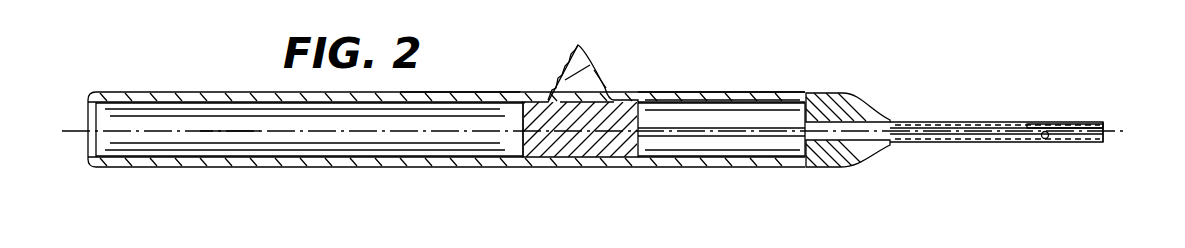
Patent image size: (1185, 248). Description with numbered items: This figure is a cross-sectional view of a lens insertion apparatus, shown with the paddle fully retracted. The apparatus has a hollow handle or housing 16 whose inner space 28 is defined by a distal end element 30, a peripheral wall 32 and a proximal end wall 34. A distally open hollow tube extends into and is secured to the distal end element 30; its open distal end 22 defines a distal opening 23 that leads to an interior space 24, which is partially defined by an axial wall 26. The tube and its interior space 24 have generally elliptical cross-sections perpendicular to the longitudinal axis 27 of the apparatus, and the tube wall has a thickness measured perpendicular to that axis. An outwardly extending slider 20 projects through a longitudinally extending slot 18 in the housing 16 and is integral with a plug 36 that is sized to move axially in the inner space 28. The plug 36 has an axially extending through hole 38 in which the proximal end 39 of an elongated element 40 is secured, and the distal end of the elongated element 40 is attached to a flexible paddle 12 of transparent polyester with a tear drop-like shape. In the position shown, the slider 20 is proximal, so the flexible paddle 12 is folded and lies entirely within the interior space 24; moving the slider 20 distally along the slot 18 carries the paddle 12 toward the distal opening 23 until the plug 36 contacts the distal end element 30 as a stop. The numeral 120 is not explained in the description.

The flexible paddle 12 is at (968, 142).
The handle or housing 16 is at (371, 170).
The longitudinally extending slot 18 is at (745, 95).
The outwardly extending slider 20 is at (588, 60).
The open distal end 22 is at (1103, 138).
The distal opening 23 is at (1105, 130).
The interior space 24 is at (1088, 85).
The axial wall 26 is at (1045, 140).
The longitudinal axis 27 is at (228, 131).
The inner space 28 is at (309, 129).
The distal end element 30 is at (857, 102).
The peripheral wall 32 is at (487, 92).
The proximal end wall 34 is at (86, 167).
The plug 36 is at (587, 142).
The axially extending through hole 38 is at (545, 150).
The proximal end 39 is at (604, 86).
The elongated element 40 is at (745, 160).
The device 120 is at (1008, 247).